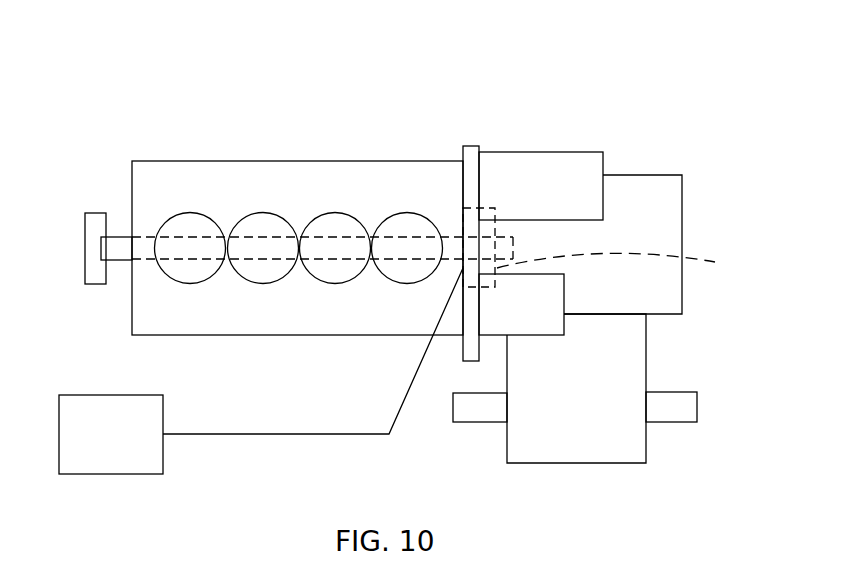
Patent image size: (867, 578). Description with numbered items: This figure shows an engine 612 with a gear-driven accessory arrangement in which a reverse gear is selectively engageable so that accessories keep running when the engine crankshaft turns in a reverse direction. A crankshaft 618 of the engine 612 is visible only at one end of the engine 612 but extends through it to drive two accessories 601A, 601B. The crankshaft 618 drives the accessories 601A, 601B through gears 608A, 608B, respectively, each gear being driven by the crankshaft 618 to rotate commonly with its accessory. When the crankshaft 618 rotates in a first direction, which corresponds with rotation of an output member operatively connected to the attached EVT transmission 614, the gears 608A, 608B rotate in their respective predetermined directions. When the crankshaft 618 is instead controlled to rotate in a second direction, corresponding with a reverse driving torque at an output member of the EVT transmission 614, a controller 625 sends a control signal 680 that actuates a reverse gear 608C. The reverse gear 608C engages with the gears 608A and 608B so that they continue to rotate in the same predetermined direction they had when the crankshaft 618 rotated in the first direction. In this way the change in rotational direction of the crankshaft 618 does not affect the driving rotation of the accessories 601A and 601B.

The engine 612 is at (237, 141).
The crankshaft 618 is at (118, 261).
The gear 608A is at (463, 147).
The accessory 601A is at (541, 186).
The accessory 601B is at (521, 304).
The EVT transmission 614 is at (697, 203).
The gear 608B is at (463, 351).
The reverse gear 608C is at (631, 270).
The controller 625 is at (111, 434).
The control signal 680 is at (270, 435).